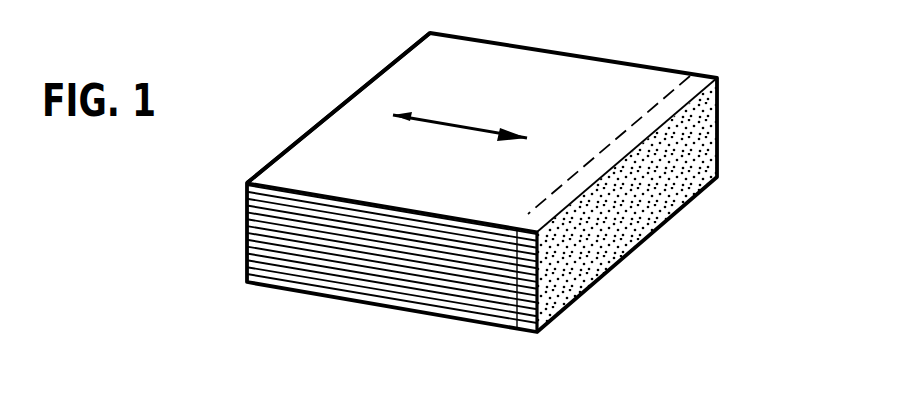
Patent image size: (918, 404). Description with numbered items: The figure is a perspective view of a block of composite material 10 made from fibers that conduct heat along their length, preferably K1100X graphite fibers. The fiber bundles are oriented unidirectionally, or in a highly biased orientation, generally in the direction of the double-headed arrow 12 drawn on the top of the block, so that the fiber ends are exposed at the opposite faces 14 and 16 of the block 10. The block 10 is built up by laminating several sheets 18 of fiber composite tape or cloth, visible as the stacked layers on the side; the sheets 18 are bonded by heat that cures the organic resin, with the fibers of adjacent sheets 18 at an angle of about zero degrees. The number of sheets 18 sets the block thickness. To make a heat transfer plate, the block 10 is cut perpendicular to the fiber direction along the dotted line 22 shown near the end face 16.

The block of composite material 10 is at (588, 77).
The double-headed arrow 12 is at (458, 125).
The face of the block 14 is at (320, 118).
The face of the block 16 is at (657, 183).
The sheets 18 is at (244, 220).
The dotted line 22 is at (663, 102).